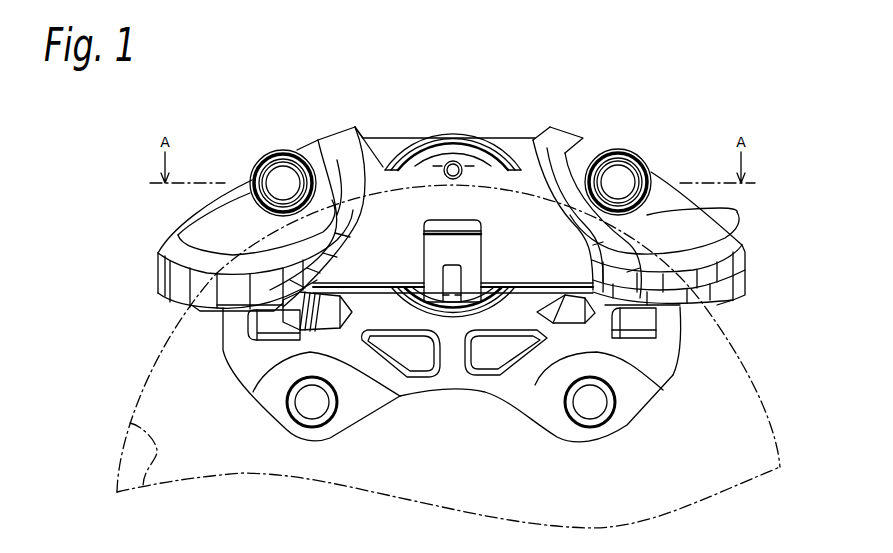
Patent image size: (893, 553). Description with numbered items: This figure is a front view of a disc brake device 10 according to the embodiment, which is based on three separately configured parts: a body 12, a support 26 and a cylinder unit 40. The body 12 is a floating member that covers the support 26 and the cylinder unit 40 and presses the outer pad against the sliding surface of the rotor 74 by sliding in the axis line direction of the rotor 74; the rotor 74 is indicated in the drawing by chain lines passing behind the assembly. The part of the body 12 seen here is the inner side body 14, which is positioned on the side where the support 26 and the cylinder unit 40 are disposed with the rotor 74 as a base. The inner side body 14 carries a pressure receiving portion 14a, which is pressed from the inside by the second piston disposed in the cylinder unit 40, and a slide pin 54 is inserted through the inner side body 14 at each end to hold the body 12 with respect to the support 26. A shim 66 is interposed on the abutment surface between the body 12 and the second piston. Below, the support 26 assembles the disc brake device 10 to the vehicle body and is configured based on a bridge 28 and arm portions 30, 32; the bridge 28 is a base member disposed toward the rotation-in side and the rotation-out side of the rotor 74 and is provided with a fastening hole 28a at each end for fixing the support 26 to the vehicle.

The disc brake device 10 is at (543, 96).
The body 12 is at (457, 215).
The inner side body 14 is at (387, 227).
The pressure receiving portion 14a is at (495, 260).
The support 26 is at (676, 384).
The bridge 28 is at (438, 380).
The fastening hole 28a is at (314, 396).
The arm portion 30 is at (237, 338).
The arm portion 32 is at (667, 348).
The cylinder unit 40 is at (513, 316).
The slide pin 54 is at (283, 183).
The shim 66 is at (417, 258).
The rotor 74 is at (143, 485).